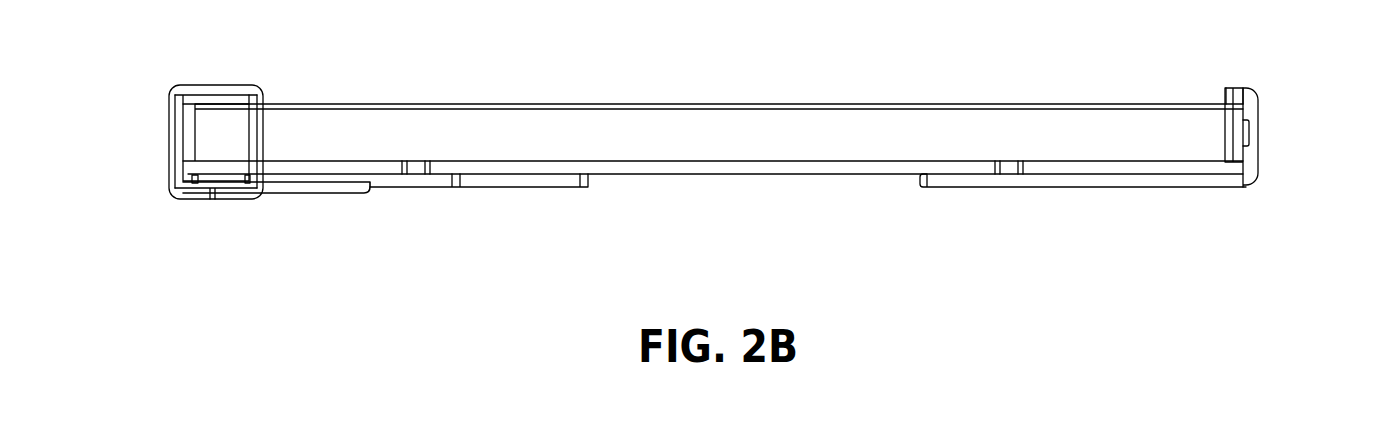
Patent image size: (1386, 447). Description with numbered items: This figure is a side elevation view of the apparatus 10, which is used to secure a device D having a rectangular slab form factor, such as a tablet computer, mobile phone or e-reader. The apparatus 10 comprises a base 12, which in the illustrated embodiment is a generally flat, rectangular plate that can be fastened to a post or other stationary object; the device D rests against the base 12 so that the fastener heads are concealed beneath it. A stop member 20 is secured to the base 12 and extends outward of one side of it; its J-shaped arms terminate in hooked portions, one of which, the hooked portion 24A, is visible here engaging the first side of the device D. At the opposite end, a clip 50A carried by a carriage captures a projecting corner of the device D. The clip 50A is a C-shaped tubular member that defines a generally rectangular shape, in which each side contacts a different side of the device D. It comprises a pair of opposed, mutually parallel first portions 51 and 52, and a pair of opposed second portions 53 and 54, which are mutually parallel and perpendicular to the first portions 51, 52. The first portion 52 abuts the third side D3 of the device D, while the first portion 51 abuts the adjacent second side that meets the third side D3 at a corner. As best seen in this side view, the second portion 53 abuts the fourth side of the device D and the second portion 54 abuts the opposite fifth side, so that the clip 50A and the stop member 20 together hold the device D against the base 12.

The apparatus 10 is at (498, 187).
The base 12 is at (760, 177).
The stop member 20 is at (1112, 189).
The hooked portion 24A is at (1247, 145).
The clip 50A is at (170, 183).
The first portion 51 is at (168, 128).
The first portion 52 is at (260, 133).
The second portion 53 is at (213, 88).
The second portion 54 is at (223, 199).
The device D is at (724, 143).
The third side D3 is at (433, 133).